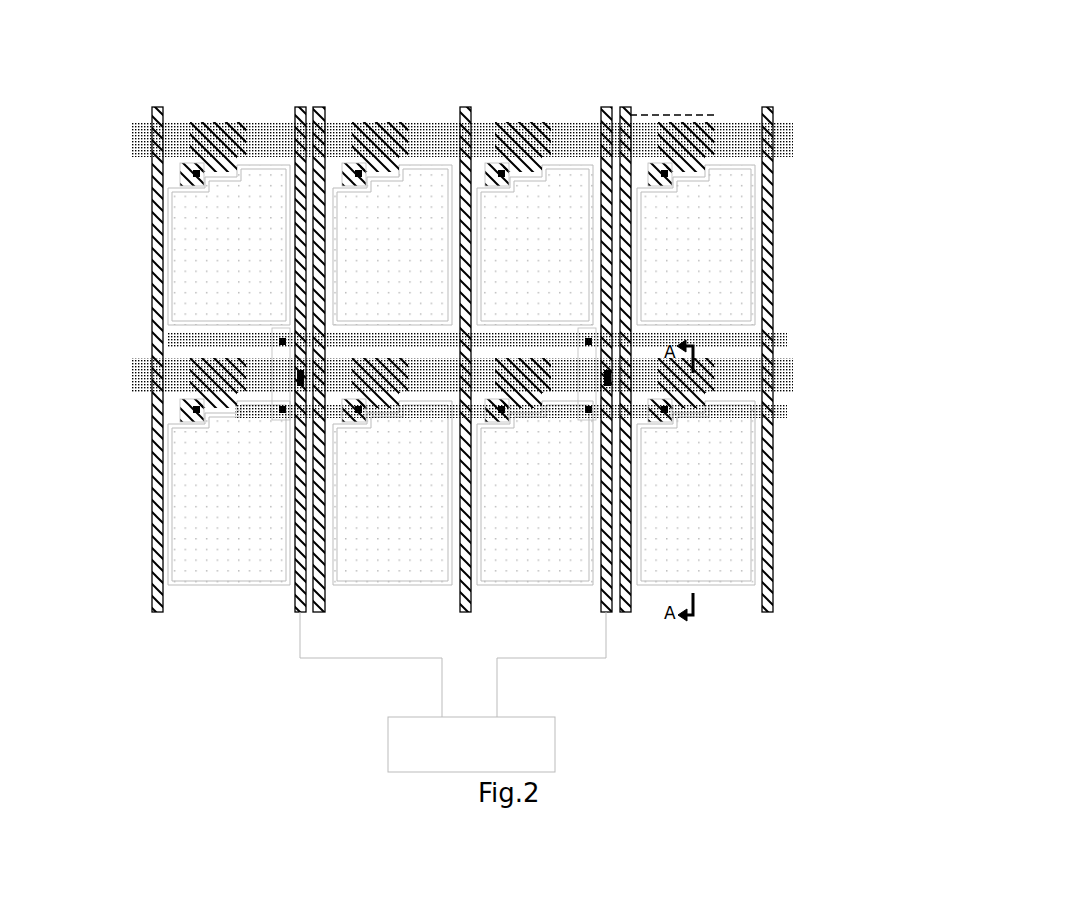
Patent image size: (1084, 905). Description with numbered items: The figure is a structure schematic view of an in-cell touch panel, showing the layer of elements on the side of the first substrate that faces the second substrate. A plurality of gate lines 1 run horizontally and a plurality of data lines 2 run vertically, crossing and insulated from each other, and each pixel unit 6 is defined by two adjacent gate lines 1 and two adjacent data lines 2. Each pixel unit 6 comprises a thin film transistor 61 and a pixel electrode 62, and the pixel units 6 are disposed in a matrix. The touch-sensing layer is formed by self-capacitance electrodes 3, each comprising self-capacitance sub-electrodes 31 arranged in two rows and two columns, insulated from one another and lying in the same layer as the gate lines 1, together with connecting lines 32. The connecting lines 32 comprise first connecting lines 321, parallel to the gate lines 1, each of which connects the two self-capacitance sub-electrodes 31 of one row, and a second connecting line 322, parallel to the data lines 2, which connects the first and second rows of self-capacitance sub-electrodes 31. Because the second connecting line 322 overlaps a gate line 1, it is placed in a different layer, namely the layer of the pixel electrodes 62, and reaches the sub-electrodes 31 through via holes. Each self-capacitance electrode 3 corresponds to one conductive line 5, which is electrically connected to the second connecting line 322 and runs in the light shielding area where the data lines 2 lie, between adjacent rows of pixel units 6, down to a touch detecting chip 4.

The gate line 1 is at (132, 142).
The data line 2 is at (158, 107).
The self-capacitance electrode 3 is at (885, 250).
The self-capacitance sub-electrode 31 is at (758, 224).
The connecting line 32 is at (840, 297).
The first connecting line 321 is at (787, 339).
The second connecting line 322 is at (772, 385).
The touch detecting chip 4 is at (537, 751).
The conductive line 5 is at (300, 107).
The pixel unit 6 is at (772, 52).
The thin film transistor 61 is at (677, 115).
The pixel electrode 62 is at (727, 180).